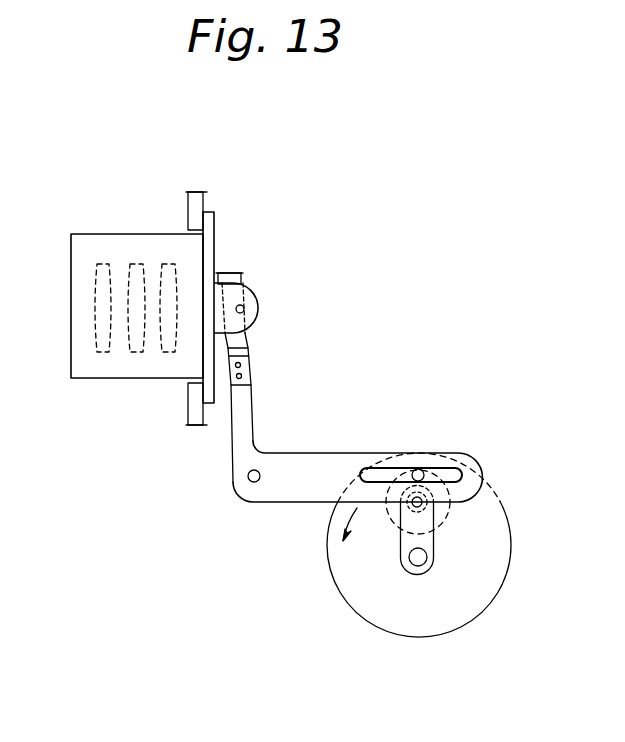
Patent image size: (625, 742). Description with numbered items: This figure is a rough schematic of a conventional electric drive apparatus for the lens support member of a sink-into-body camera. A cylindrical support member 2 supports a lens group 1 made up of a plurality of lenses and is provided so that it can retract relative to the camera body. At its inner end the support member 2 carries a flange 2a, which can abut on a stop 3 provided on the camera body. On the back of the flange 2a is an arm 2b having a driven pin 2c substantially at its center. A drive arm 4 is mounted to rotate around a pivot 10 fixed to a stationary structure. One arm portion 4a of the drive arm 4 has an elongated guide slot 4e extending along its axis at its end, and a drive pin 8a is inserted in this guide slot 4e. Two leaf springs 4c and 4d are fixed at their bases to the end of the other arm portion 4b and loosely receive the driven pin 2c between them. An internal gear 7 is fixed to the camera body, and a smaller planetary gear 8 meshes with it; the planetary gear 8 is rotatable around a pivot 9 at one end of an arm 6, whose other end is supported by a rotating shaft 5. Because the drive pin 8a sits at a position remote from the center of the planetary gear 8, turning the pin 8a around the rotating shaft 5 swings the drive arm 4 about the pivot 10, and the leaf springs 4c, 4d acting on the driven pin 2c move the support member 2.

The lens group 1 is at (98, 298).
The cylindrical support member 2 is at (85, 378).
The flange 2a is at (213, 215).
The arm 2b is at (250, 300).
The driven pin 2c is at (240, 273).
The stop 3 is at (193, 205).
The drive arm 4 is at (349, 444).
The arm portion 4a is at (288, 492).
The arm portion 4b is at (243, 402).
The leaf spring 4c is at (248, 338).
The leaf spring 4d is at (247, 347).
The guide slot 4e is at (368, 467).
The rotating shaft 5 is at (420, 566).
The arm 6 is at (407, 550).
The internal gear 7 is at (510, 553).
The planetary gear 8 is at (445, 512).
The drive pin 8a is at (421, 469).
The pivot 9 is at (422, 508).
The pivot 10 is at (250, 480).